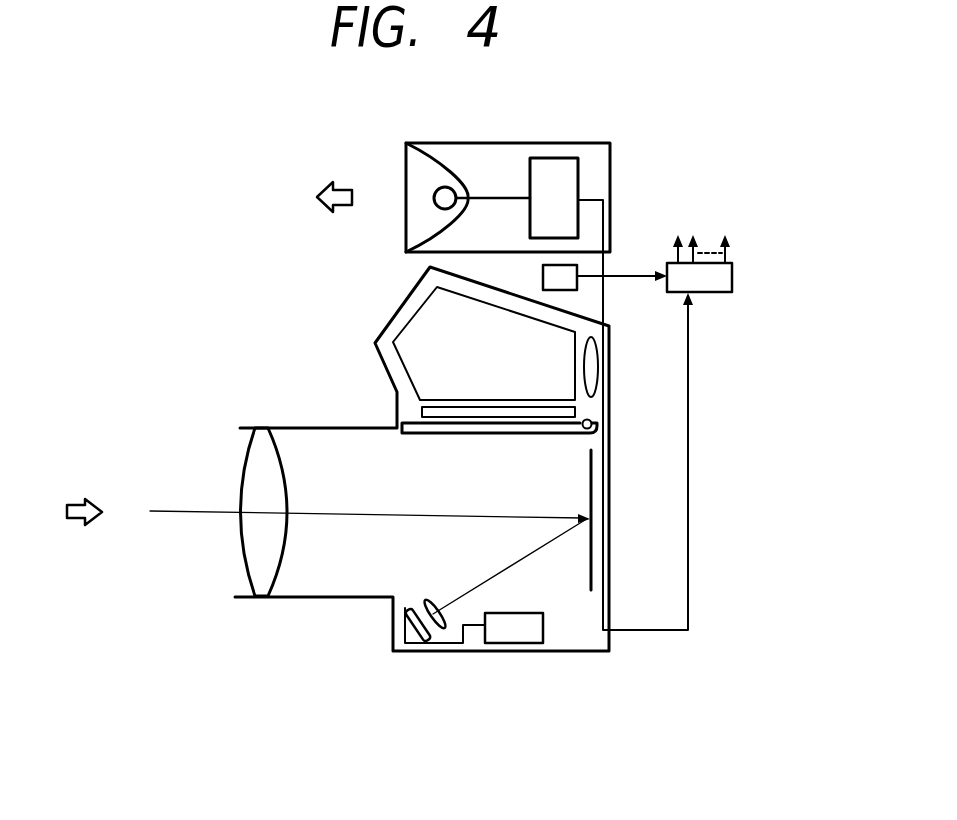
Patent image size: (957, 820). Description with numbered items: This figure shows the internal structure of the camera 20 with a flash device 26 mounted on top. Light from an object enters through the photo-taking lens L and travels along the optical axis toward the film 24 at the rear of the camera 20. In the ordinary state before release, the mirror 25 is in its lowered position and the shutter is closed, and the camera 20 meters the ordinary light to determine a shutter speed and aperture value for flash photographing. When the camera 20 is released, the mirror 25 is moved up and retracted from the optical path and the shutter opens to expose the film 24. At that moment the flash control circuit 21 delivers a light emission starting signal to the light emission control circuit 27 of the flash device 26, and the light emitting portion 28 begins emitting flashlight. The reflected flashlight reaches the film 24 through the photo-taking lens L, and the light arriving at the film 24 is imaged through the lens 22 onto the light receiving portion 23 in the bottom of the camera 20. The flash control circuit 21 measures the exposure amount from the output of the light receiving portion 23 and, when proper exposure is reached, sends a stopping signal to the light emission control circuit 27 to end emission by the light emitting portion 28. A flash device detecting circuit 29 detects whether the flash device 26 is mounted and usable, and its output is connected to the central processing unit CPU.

The camera 20 is at (610, 640).
The flash control circuit 21 is at (522, 637).
The lens 22 is at (445, 653).
The light receiving portion 23 is at (421, 652).
The film 24 is at (596, 478).
The mirror 25 is at (592, 424).
The flash device 26 is at (595, 144).
The light emission control circuit 27 is at (555, 170).
The light emitting portion 28 is at (430, 168).
The flash device detecting circuit 29 is at (573, 276).
The photo-taking lens L is at (250, 468).
The central processing unit CPU is at (727, 277).